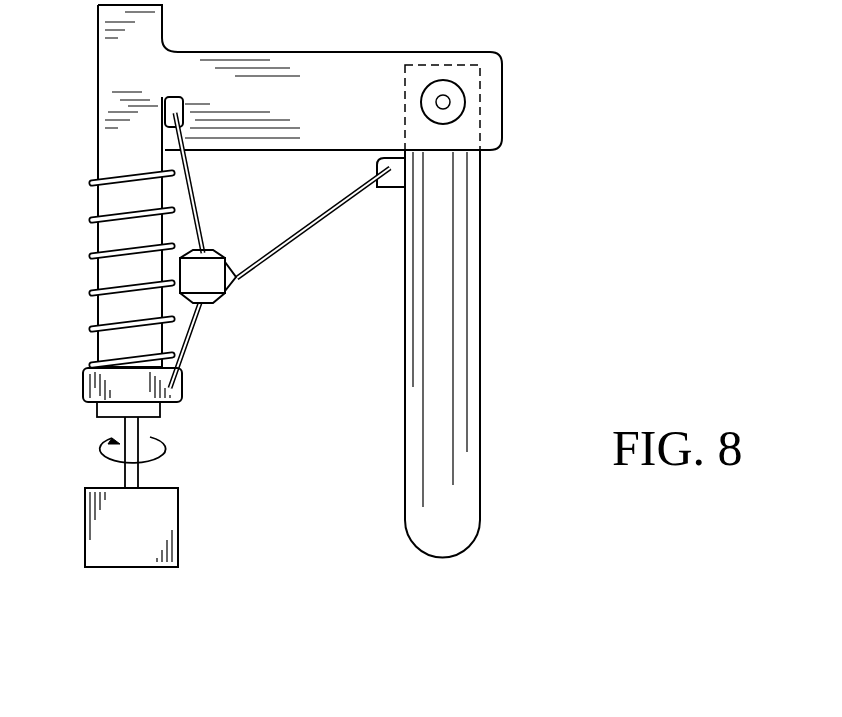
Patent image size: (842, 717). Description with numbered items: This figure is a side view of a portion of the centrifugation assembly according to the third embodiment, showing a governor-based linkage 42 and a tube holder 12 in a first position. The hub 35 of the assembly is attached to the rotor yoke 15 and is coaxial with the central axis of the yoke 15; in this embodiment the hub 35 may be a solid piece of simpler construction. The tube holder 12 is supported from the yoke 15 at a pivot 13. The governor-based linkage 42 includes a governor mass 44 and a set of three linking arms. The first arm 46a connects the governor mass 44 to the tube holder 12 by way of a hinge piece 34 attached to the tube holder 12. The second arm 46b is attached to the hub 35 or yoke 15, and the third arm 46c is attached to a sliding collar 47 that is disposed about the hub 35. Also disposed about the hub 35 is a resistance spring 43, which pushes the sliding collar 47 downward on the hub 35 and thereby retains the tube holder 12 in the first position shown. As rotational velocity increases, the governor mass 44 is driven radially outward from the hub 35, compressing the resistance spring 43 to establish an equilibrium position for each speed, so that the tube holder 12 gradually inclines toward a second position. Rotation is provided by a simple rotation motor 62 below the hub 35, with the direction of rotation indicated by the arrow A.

The tube holder 12 is at (470, 362).
The pivot 13 is at (443, 98).
The rotor yoke 15 is at (315, 65).
The hinge piece 34 is at (395, 188).
The hub 35 is at (106, 60).
The governor-based linkage 42 is at (252, 320).
The resistance spring 43 is at (92, 328).
The governor mass 44 is at (212, 266).
The first arm 46a is at (303, 232).
The second arm 46b is at (206, 178).
The third arm 46c is at (190, 358).
The sliding collar 47 is at (86, 389).
The rotation motor 62 is at (170, 517).
The rotation direction A is at (165, 448).